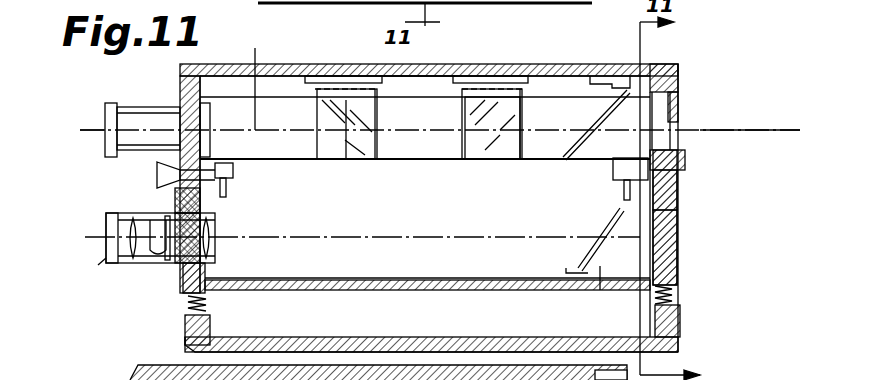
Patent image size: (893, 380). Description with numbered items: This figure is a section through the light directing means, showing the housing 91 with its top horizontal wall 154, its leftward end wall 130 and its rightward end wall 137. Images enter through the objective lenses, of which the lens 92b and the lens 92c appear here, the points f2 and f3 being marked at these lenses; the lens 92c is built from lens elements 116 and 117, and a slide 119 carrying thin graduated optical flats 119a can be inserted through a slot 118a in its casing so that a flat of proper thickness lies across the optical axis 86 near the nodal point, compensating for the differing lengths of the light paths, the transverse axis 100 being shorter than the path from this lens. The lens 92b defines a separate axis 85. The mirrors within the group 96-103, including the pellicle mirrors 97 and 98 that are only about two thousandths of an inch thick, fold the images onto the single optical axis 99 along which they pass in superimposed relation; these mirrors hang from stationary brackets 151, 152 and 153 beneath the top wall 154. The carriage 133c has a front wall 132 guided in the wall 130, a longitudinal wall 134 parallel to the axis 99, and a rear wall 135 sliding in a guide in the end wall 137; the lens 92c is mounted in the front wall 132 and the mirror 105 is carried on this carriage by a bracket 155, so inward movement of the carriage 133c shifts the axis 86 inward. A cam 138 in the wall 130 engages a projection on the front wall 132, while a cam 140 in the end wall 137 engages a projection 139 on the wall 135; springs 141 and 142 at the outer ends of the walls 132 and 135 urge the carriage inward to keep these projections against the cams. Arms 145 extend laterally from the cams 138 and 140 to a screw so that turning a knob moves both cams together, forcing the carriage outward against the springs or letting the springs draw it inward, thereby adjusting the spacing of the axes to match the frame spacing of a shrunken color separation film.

The optical axis 85 is at (255, 56).
The optical axis 86 is at (347, 237).
The casing 91 is at (296, 49).
The objective lens 92b is at (166, 104).
The objective lens 92c is at (163, 265).
The mirrors and transverse axes 96-103 is at (377, 118).
The mirror 97 is at (520, 112).
The mirror 98 is at (596, 117).
The single optical axis 99 is at (793, 130).
The transverse axis 100 is at (345, 135).
The mirror 105 is at (580, 250).
The lens element 116 is at (120, 233).
The lens element 117 is at (213, 238).
The lens 118a is at (152, 217).
The slide 119 is at (213, 223).
The optical flats 119a is at (162, 243).
The leftward end wall 130 is at (186, 335).
The front wall 132 is at (206, 276).
The carriage 133c is at (397, 280).
The longitudinal wall 134 is at (492, 280).
The wall 135 is at (684, 247).
The rightward end wall 137 is at (680, 178).
The cam 138 is at (156, 175).
The projections 139 is at (684, 212).
The cam 140 is at (672, 126).
The springs 141 is at (208, 302).
The springs 142 is at (688, 292).
The arms 145 is at (226, 190).
The bracket 151 is at (340, 78).
The bracket 152 is at (481, 84).
The bracket 153 is at (612, 62).
The top horizontal wall 154 is at (428, 68).
The bracket 155 is at (600, 270).
The focal point f2 is at (106, 119).
The focal point f3 is at (106, 257).